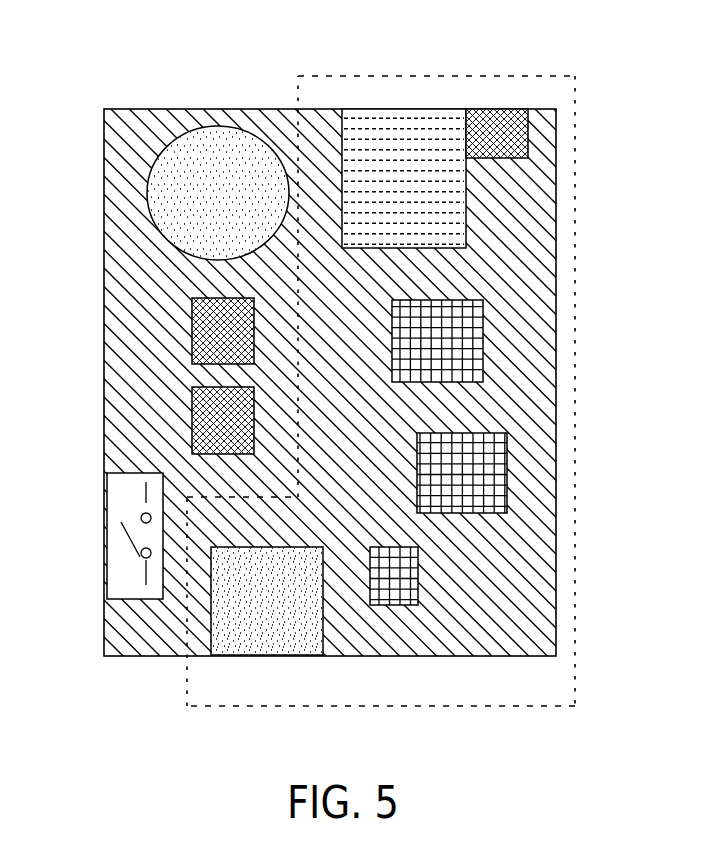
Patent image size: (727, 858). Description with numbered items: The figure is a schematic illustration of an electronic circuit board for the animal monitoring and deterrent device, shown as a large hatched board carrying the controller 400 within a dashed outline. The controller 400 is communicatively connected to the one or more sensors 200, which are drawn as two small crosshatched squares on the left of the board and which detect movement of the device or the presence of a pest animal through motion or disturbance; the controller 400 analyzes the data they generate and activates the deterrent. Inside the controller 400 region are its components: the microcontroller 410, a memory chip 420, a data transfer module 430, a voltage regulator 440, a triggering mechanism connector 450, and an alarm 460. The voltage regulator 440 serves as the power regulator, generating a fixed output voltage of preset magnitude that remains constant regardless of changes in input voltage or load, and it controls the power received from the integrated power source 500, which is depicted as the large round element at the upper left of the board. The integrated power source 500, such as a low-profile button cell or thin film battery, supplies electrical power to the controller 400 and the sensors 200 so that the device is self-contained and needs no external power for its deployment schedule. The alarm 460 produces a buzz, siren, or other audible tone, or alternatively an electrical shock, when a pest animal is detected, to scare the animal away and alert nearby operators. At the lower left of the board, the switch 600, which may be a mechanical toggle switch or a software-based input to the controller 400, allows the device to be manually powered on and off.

The integrated power source 500 is at (158, 138).
The controller 400 is at (590, 97).
The memory chip 420 is at (403, 136).
The data transfer module 430 is at (495, 133).
The alarm 460 is at (494, 316).
The microcontroller 410 is at (508, 520).
The voltage regulator 440 is at (419, 617).
The triggering mechanism connector 450 is at (236, 665).
The sensors 200 is at (176, 332).
The switch 600 is at (98, 576).